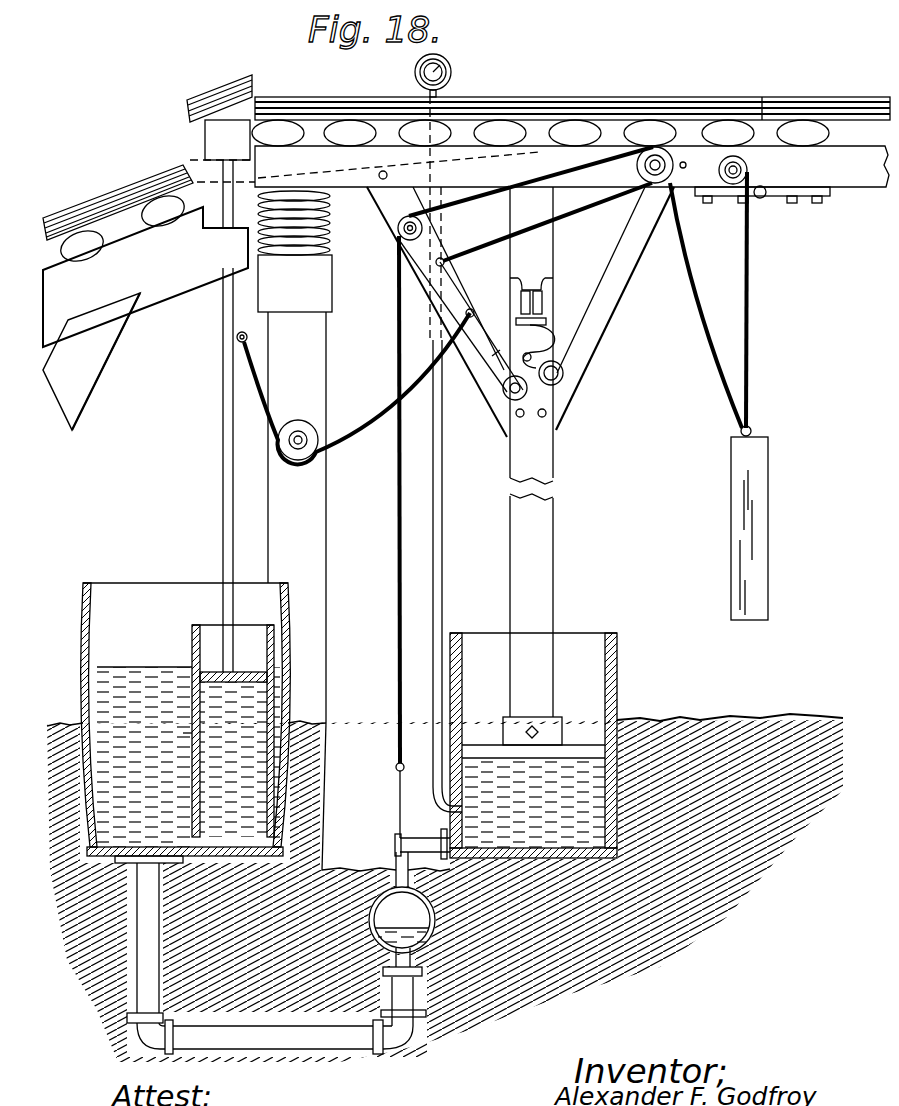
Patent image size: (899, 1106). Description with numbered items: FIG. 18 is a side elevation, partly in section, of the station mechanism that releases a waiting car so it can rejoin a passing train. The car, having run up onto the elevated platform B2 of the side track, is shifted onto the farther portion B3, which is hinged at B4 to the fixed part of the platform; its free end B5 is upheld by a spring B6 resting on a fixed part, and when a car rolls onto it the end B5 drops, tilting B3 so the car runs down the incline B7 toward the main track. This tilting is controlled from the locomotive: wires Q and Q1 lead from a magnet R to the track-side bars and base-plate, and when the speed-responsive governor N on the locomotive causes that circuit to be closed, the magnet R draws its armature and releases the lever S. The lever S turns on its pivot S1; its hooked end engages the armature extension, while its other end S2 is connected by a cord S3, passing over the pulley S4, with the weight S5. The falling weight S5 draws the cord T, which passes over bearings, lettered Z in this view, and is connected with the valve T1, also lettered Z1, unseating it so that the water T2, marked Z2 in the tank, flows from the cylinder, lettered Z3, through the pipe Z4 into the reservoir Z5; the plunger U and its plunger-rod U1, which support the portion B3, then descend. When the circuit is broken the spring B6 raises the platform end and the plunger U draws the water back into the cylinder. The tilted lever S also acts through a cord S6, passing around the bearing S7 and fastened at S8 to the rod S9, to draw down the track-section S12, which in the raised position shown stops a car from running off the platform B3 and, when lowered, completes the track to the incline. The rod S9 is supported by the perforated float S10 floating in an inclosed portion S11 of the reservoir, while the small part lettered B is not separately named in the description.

The inclosed portion of the reservoir S11 is at (444, 72).
The elevated portion of the side track B2 is at (572, 90).
The farther portion of the platform B3 is at (520, 291).
The free end of the platform section B5 is at (539, 218).
The spring B6 is at (330, 229).
The incline B7 is at (145, 297).
The hinge B4 is at (760, 198).
The magnet R is at (543, 302).
The section of the railway-track S12 is at (190, 111).
The rod S9 is at (223, 383).
The attachment point on the rod S8 is at (251, 330).
The bearing S7 is at (300, 424).
The cord S6 is at (444, 566).
The governor N is at (524, 492).
The end of the lever S2 is at (460, 295).
The lever S is at (492, 360).
The cord S3 is at (540, 299).
The cord T is at (640, 167).
The valve T1 is at (512, 341).
The pulley S4 is at (738, 286).
The weight S5 is at (758, 523).
The plunger-rod U1 is at (531, 452).
The wire Q is at (510, 279).
The wire Q1 is at (553, 281).
The water T2 is at (562, 370).
The pin B is at (237, 690).
The plunger U is at (545, 731).
The outer tank Z5 is at (186, 723).
The pivot of the lever S1 is at (192, 755).
The tank Z is at (179, 733).
The float S10 is at (240, 672).
The tank Z2 is at (533, 745).
The ground Z3 is at (618, 787).
The vessel Z1 is at (409, 898).
The pipe Z4 is at (276, 958).